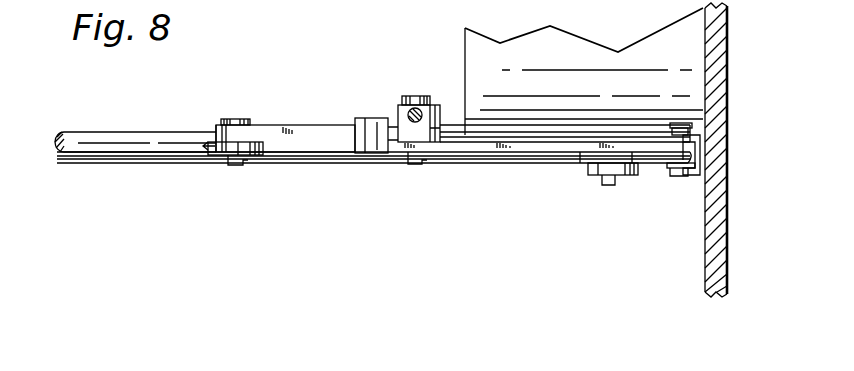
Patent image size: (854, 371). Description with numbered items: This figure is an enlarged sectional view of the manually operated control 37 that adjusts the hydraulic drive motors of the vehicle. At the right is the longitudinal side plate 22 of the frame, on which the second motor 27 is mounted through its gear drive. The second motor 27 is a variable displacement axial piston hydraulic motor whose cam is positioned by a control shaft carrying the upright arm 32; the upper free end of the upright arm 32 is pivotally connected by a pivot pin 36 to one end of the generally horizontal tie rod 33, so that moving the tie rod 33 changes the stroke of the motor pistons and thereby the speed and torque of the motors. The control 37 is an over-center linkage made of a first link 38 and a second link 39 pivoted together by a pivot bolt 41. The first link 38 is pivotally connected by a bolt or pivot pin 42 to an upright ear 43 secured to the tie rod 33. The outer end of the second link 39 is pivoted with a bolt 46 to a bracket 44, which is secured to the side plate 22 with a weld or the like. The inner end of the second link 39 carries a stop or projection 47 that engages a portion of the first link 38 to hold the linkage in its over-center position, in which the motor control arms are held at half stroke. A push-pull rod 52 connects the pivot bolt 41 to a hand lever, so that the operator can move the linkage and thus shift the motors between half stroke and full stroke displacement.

The longitudinal side plate 22 is at (727, 96).
The second motor 27 is at (562, 52).
The upright arm 32 is at (591, 168).
The tie rod 33 is at (106, 137).
The pivot pin 36 is at (606, 186).
The manually operated control 37 is at (302, 80).
The first link 38 is at (290, 137).
The second link 39 is at (536, 145).
The pivot bolt 41 is at (415, 163).
The pivot pin 42 is at (235, 166).
The upright ear 43 is at (212, 151).
The bracket 44 is at (698, 169).
The bolt 46 is at (676, 123).
The stop 47 is at (367, 118).
The push-pull rod 52 is at (424, 117).